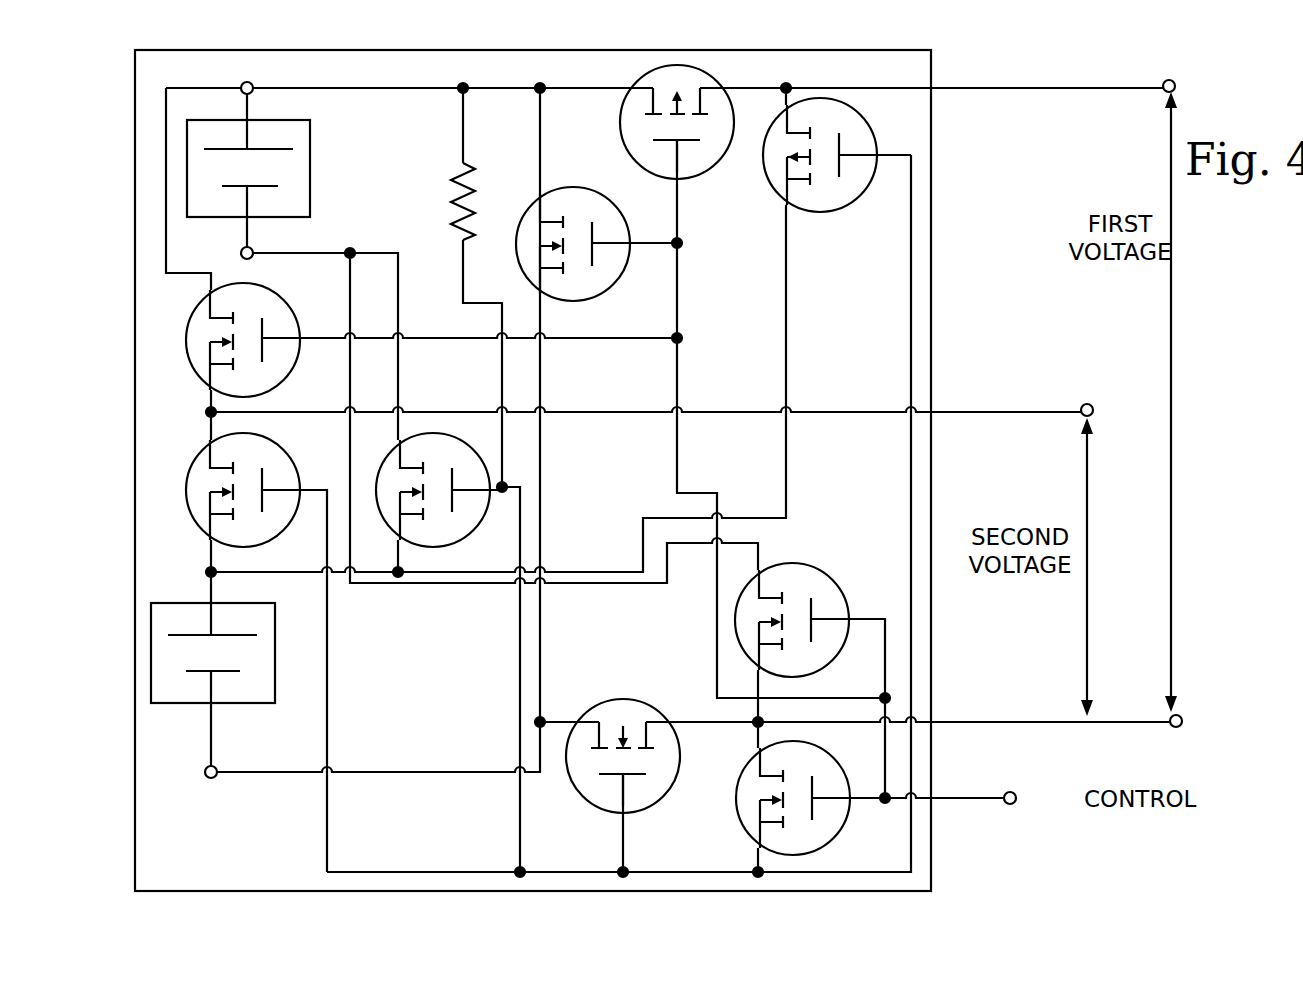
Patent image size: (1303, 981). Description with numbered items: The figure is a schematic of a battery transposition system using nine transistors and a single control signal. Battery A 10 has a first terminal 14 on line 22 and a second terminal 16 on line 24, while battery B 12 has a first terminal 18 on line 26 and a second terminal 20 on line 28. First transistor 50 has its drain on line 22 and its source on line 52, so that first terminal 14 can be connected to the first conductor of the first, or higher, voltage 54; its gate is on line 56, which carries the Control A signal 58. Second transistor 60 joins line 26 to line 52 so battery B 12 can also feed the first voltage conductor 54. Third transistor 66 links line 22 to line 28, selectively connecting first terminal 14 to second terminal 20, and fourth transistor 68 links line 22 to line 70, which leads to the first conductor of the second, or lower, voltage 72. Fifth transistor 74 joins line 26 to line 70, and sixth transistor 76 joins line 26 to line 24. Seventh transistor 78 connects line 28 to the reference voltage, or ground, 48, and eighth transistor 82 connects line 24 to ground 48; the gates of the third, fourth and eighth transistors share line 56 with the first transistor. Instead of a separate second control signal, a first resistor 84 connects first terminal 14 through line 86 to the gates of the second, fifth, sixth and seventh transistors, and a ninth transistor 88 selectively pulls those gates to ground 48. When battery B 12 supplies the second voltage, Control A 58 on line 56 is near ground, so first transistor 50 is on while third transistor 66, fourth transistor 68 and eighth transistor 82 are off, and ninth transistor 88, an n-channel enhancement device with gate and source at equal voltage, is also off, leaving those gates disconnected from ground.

The battery A 10 is at (310, 144).
The battery B 12 is at (245, 604).
The first terminal 14 is at (253, 82).
The second terminal 16 is at (255, 248).
The first terminal 18 is at (205, 572).
The second terminal 20 is at (205, 772).
The line 22 is at (390, 90).
The line 24 is at (356, 250).
The line 26 is at (736, 518).
The line 28 is at (414, 772).
The reference voltage 48 is at (1183, 716).
The first transistor 50 is at (632, 82).
The line 52 is at (806, 84).
The first conductor of the first voltage 54 is at (1176, 78).
The line 56 is at (690, 288).
The Control A 58 is at (1014, 792).
The second transistor 60 is at (860, 114).
The third transistor 66 is at (560, 188).
The fourth transistor 68 is at (283, 300).
The line 70 is at (734, 410).
The first conductor of the second voltage 72 is at (1089, 402).
The fifth transistor 74 is at (290, 452).
The sixth transistor 76 is at (445, 436).
The seventh transistor 78 is at (623, 702).
The eighth transistor 82 is at (806, 566).
The first resistor 84 is at (452, 180).
The line 86 is at (462, 264).
The ninth transistor 88 is at (840, 768).